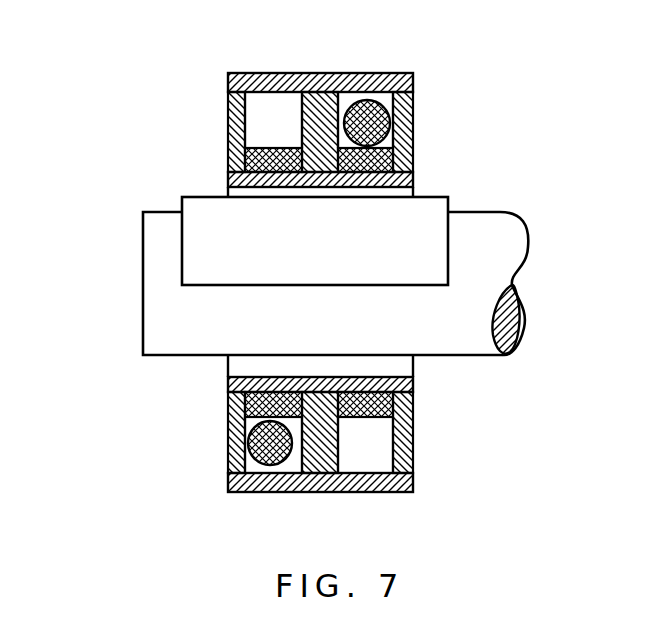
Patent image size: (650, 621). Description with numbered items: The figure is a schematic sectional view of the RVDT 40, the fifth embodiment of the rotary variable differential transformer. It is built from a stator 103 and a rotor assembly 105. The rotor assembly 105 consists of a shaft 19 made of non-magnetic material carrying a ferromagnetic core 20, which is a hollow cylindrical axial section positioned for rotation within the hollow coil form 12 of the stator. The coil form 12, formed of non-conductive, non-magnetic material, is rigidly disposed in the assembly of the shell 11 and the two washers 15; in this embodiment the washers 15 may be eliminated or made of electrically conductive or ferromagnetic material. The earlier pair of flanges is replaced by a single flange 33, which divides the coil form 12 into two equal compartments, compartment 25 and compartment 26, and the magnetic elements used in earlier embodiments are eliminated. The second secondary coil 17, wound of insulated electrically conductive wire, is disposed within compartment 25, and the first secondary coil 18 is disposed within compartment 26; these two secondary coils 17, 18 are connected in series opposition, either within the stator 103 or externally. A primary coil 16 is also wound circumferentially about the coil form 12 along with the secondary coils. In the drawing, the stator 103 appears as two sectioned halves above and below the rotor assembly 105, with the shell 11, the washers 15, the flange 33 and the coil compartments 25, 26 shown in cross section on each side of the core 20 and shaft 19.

The shell 11 is at (397, 72).
The coil form 12 is at (392, 383).
The washers 15 is at (400, 146).
The primary coil 16 is at (381, 103).
The second secondary coil 17 is at (250, 399).
The first secondary coil 18 is at (405, 401).
The shaft 19 is at (158, 240).
The ferromagnetic core 20 is at (198, 216).
The compartment 25 is at (256, 112).
The compartment 26 is at (372, 458).
The flange 33 is at (318, 97).
The RVDT 40 is at (362, 284).
The stator 103 is at (196, 181).
The rotor assembly 105 is at (130, 306).